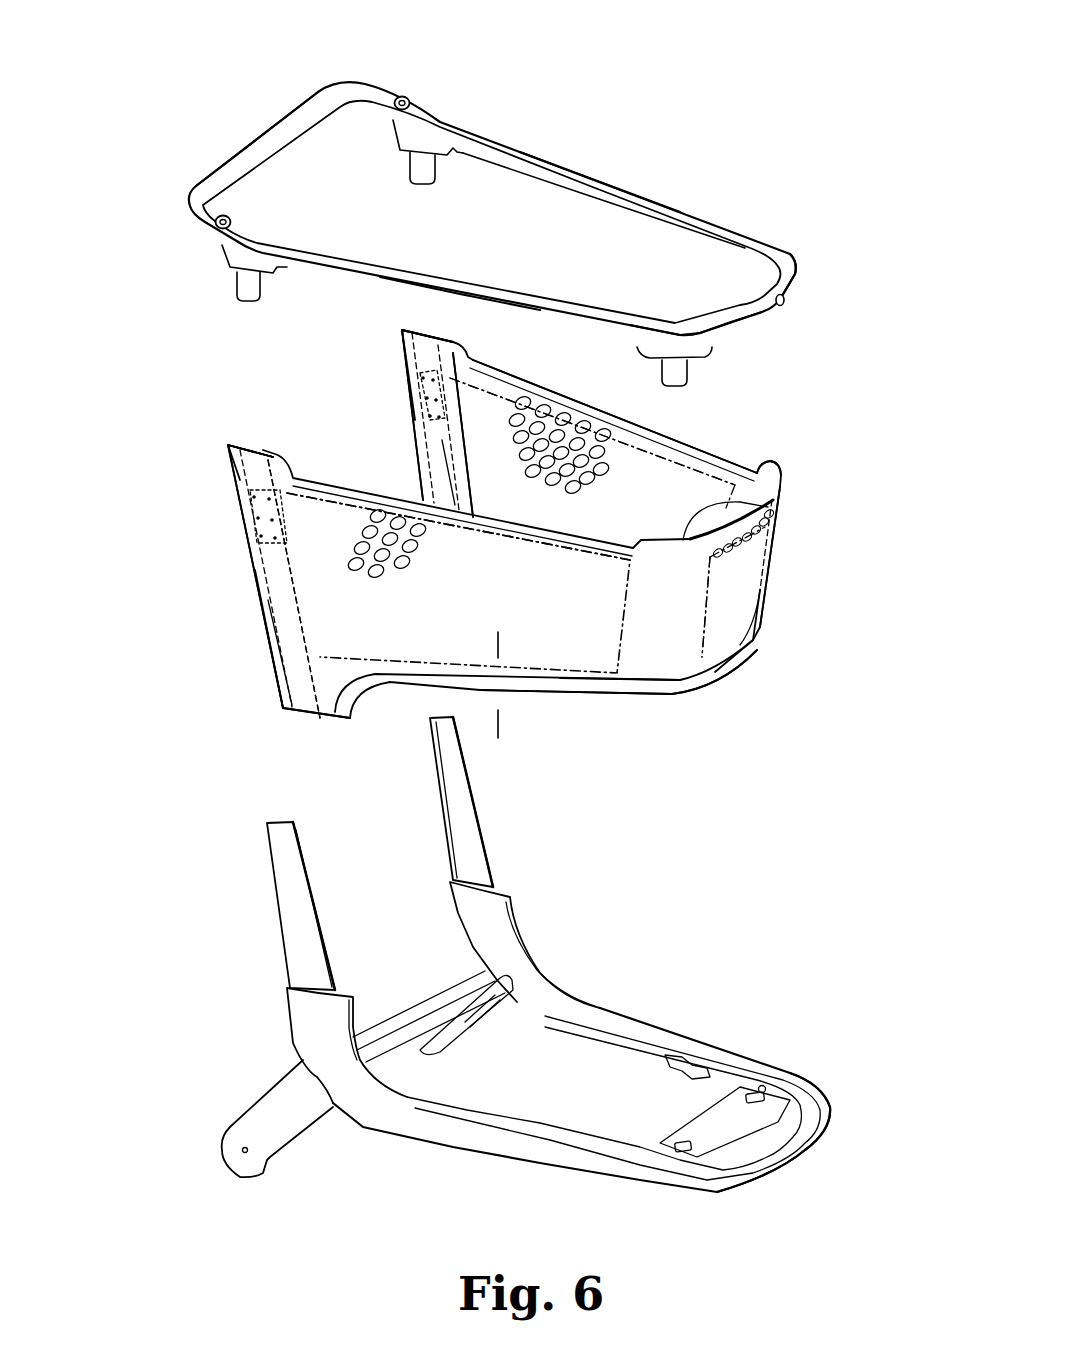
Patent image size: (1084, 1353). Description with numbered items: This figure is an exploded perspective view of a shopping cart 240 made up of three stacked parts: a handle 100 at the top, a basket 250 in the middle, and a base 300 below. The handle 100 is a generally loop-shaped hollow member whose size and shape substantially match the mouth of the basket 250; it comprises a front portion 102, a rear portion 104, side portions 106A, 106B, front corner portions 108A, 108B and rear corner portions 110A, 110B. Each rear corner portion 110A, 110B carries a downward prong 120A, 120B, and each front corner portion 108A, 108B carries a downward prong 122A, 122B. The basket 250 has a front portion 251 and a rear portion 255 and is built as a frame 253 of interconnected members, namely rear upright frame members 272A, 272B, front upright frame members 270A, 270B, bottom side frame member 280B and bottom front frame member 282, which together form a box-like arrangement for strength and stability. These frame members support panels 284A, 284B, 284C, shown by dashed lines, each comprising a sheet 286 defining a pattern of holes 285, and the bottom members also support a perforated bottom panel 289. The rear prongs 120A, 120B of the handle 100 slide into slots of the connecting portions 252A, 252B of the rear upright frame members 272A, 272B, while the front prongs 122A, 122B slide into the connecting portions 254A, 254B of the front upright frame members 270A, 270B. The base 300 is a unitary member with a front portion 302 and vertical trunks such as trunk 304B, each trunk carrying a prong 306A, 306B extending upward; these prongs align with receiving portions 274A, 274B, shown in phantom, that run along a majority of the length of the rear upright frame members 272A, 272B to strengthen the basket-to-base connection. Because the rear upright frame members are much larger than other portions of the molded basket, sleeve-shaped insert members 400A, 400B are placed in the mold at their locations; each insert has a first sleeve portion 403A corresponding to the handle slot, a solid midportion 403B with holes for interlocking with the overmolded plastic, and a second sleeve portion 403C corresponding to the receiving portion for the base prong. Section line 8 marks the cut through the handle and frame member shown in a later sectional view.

The shopping cart 240 is at (710, 100).
The handle 100 is at (690, 203).
The front portion 102 is at (757, 317).
The rear portion 104 is at (257, 125).
The side portion 106A is at (590, 177).
The side portion 106B is at (505, 250).
The front corner portion 108A is at (793, 270).
The front corner portion 108B is at (677, 333).
The rear corner portion 110A is at (433, 128).
The rear corner portion 110B is at (253, 243).
The rear prong 120A is at (420, 168).
The rear prong 120B is at (243, 290).
The front prong 122A is at (784, 302).
The front prong 122B is at (690, 377).
The basket 250 is at (707, 447).
The front portion 251 is at (783, 600).
The connecting portion 252A is at (402, 334).
The connecting portion 252B is at (262, 447).
The frame 253 is at (235, 472).
The connecting portion 254A is at (783, 470).
The connecting portion 254B is at (760, 510).
The rear portion 255 is at (185, 445).
The front upright frame member 270A is at (772, 573).
The front upright frame member 270B is at (647, 657).
The rear upright frame member 272A is at (407, 387).
The rear upright frame member 272B is at (278, 675).
The receiving portion 274A is at (433, 487).
The receiving portion 274B is at (268, 552).
The bottom side frame member 280B is at (587, 693).
The bottom front frame member 282 is at (723, 663).
The panel 284A is at (667, 525).
The panel 284B is at (500, 618).
The panel 284C is at (733, 603).
The holes 285 is at (540, 413).
The sheet 286 is at (597, 422).
The bottom panel 289 is at (700, 690).
The base 300 is at (637, 1013).
The front portion 302 is at (787, 1165).
The trunk 304B is at (513, 913).
The prong 306A is at (447, 810).
The prong 306B is at (278, 875).
The insert member 400A is at (420, 445).
The insert member 400B is at (258, 598).
The first sleeve portion 403A is at (260, 457).
The solid midportion 403B is at (258, 512).
The second sleeve portion 403C is at (290, 650).
The section line 8- 8 is at (507, 724).